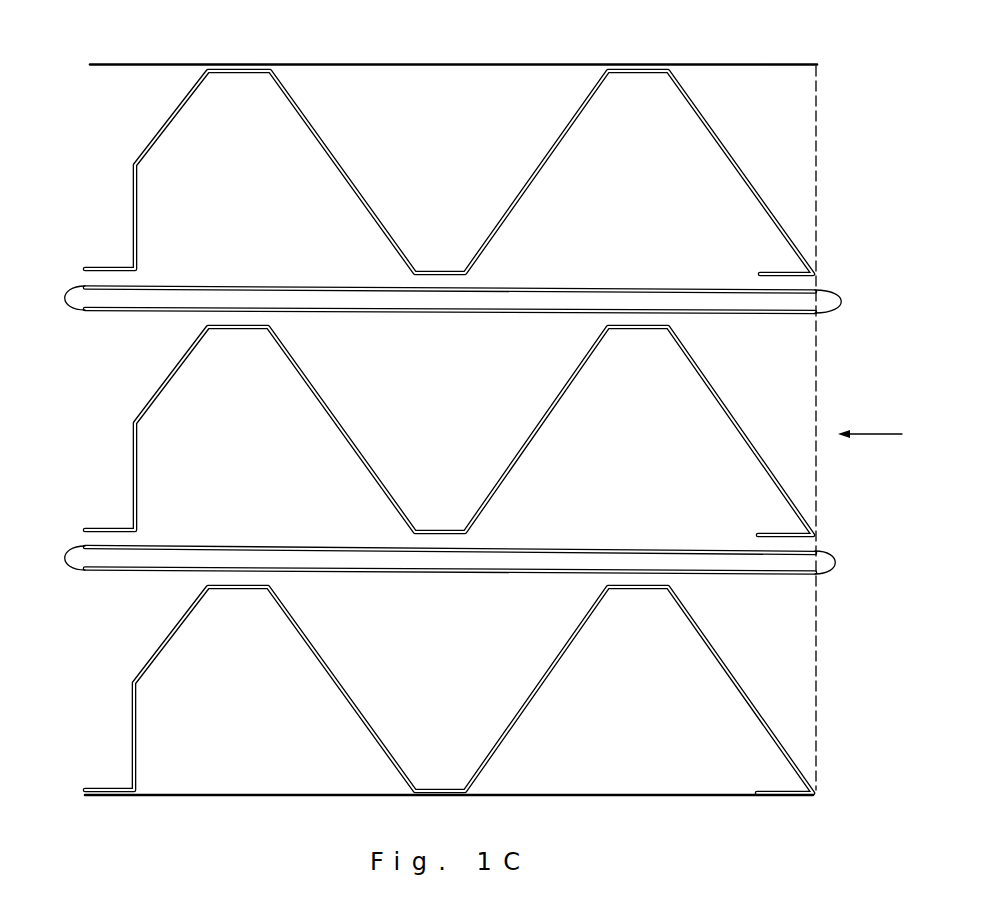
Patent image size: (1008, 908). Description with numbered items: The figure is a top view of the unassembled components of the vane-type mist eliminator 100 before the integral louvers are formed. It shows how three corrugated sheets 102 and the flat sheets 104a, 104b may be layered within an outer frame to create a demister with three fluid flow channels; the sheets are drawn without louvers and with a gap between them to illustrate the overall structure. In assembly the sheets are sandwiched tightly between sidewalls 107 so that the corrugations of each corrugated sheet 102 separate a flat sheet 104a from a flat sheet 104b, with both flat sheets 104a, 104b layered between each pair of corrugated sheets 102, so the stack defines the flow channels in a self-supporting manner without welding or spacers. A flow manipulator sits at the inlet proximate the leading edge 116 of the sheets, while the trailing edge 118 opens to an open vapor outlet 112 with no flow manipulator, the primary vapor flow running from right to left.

The mist eliminator 100 is at (106, 50).
The sidewalls 107 is at (182, 63).
The corrugated sheets 102 is at (126, 168).
The open vapor outlet 112 is at (106, 411).
The trailing edge 118 is at (85, 286).
The flat sheet 104b is at (238, 285).
The flat sheet 104a is at (404, 313).
The leading edge 116 is at (830, 313).